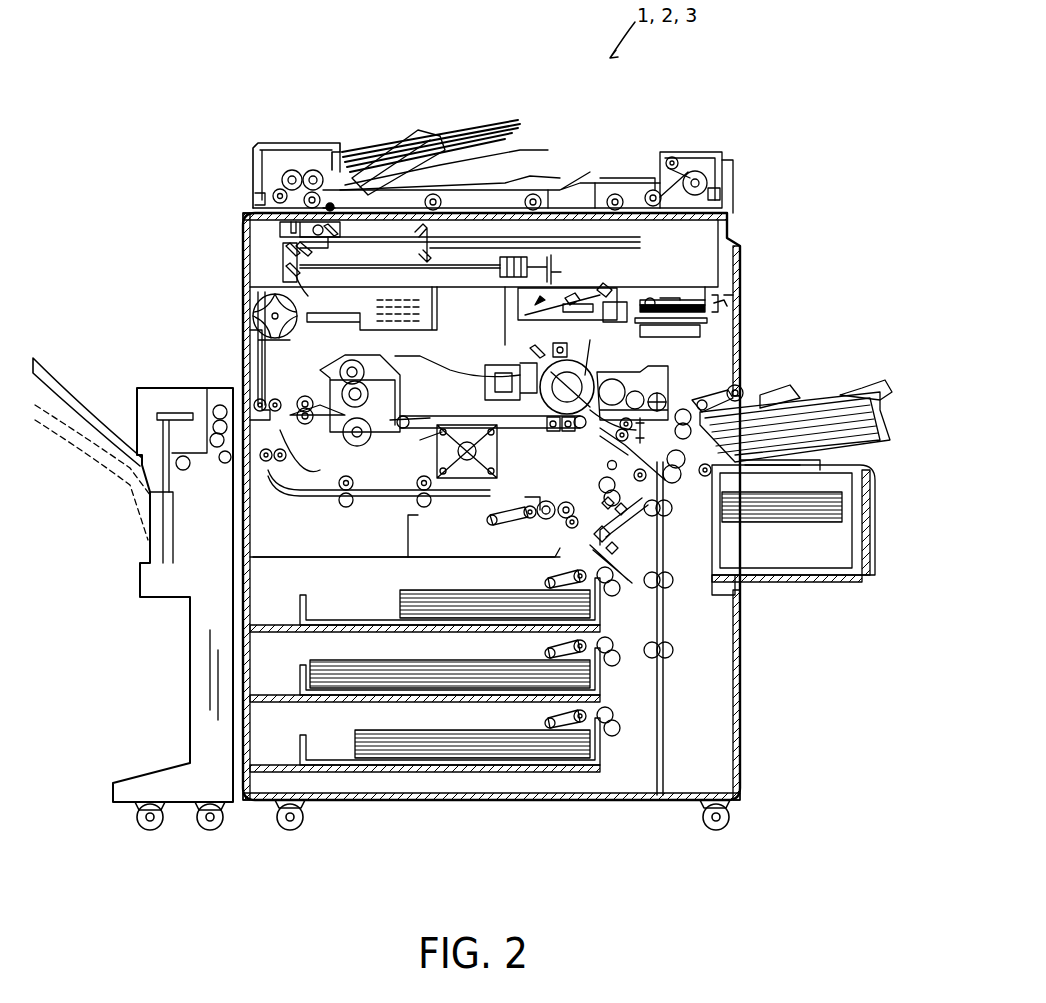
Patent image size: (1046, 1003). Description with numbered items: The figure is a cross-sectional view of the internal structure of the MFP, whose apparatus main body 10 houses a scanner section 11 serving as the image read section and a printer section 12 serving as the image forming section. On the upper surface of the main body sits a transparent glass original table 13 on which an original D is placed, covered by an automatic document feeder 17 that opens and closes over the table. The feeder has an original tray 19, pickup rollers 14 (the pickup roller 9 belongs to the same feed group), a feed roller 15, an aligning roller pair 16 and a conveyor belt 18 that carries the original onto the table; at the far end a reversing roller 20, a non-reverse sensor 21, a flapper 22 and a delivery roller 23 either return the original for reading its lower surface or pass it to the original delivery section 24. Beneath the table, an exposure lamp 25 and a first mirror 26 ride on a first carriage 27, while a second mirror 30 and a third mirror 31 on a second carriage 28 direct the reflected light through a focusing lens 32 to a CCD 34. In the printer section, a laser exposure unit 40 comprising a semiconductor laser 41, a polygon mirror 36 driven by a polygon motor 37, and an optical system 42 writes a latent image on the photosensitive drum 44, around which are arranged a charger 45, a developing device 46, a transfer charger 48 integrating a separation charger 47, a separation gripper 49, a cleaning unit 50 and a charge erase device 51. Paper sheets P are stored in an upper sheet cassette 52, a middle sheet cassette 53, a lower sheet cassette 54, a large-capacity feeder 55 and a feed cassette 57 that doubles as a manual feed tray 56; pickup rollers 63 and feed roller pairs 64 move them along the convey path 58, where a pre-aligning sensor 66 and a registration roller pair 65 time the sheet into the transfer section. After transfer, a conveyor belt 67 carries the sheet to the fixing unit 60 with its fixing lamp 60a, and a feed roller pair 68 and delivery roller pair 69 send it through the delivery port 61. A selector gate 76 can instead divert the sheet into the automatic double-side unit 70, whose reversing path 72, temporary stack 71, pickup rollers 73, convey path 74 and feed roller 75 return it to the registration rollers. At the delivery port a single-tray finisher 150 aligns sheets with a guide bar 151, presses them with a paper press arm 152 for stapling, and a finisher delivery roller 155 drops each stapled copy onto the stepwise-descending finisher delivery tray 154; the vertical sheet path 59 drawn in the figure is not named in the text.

The document feed roller 9 is at (318, 168).
The apparatus main body 10 is at (742, 695).
The scanner section 11 is at (487, 232).
The printer section 12 is at (690, 370).
The original table 13 is at (586, 183).
The pickup rollers 14 is at (293, 170).
The feed roller 15 is at (271, 190).
The aligning roller pair 16 is at (258, 200).
The automatic document feeder 17 is at (387, 131).
The conveyor belt 18 is at (473, 180).
The original tray 19 is at (405, 153).
The reversing roller 20 is at (725, 172).
The non-reverse sensor 21 is at (722, 194).
The flapper 22 is at (690, 165).
The delivery roller 23 is at (668, 157).
The original delivery section 24 is at (527, 190).
The exposure lamp 25 is at (345, 232).
The first mirror 26 is at (318, 252).
The first carriage 27 is at (288, 232).
The second carriage 28 is at (283, 262).
The second mirror 30 is at (285, 272).
The third mirror 31 is at (322, 312).
The focusing lens 32 is at (518, 243).
The CCD 34 is at (565, 263).
The polygon mirror 36 is at (700, 298).
The polygon motor 37 is at (690, 330).
The laser exposure unit 40 is at (735, 296).
The semiconductor laser 41 is at (652, 298).
The optical system 42 is at (520, 303).
The photosensitive drum 44 is at (598, 368).
The charger 45 is at (566, 355).
The developing device 46 is at (680, 378).
The separation charger 47 is at (552, 442).
The transfer charger 48 is at (568, 432).
The separation gripper 49 is at (490, 414).
The cleaning unit 50 is at (500, 365).
The charge erase device 51 is at (538, 350).
The upper sheet cassette 52 is at (308, 612).
The middle sheet cassette 53 is at (308, 682).
The lower sheet cassette 54 is at (308, 752).
The large-capacity feeder 55 is at (818, 570).
The manual feed tray 56 is at (798, 392).
The feed cassette 57 is at (862, 388).
The convey path 58 is at (425, 403).
The vertical transport path 59 is at (635, 525).
The fixing unit 60 is at (370, 370).
The fixing lamp 60a is at (372, 450).
The delivery port 61 is at (255, 405).
The pickup rollers 63 is at (548, 718).
The feed roller pairs 64 is at (620, 730).
The registration roller pair 65 is at (615, 440).
The pre-aligning sensor 66 is at (638, 445).
The conveyor belt 67 is at (418, 440).
The feed roller pair 68 is at (305, 445).
The delivery roller pair 69 is at (258, 390).
The automatic double-side unit 70 is at (288, 509).
The temporary stack 71 is at (455, 538).
The reversing path 72 is at (318, 497).
The pickup rollers 73 is at (535, 525).
The convey path 74 is at (612, 462).
The feed roller 75 is at (566, 528).
The selector gate 76 is at (286, 412).
The single-tray finisher 150 is at (135, 402).
The guide bar 151 is at (170, 410).
The paper press arm 152 is at (222, 463).
The finisher delivery tray 154 is at (62, 448).
The finisher delivery roller 155 is at (185, 472).
The paper sheet P is at (768, 510).
The original D is at (552, 183).